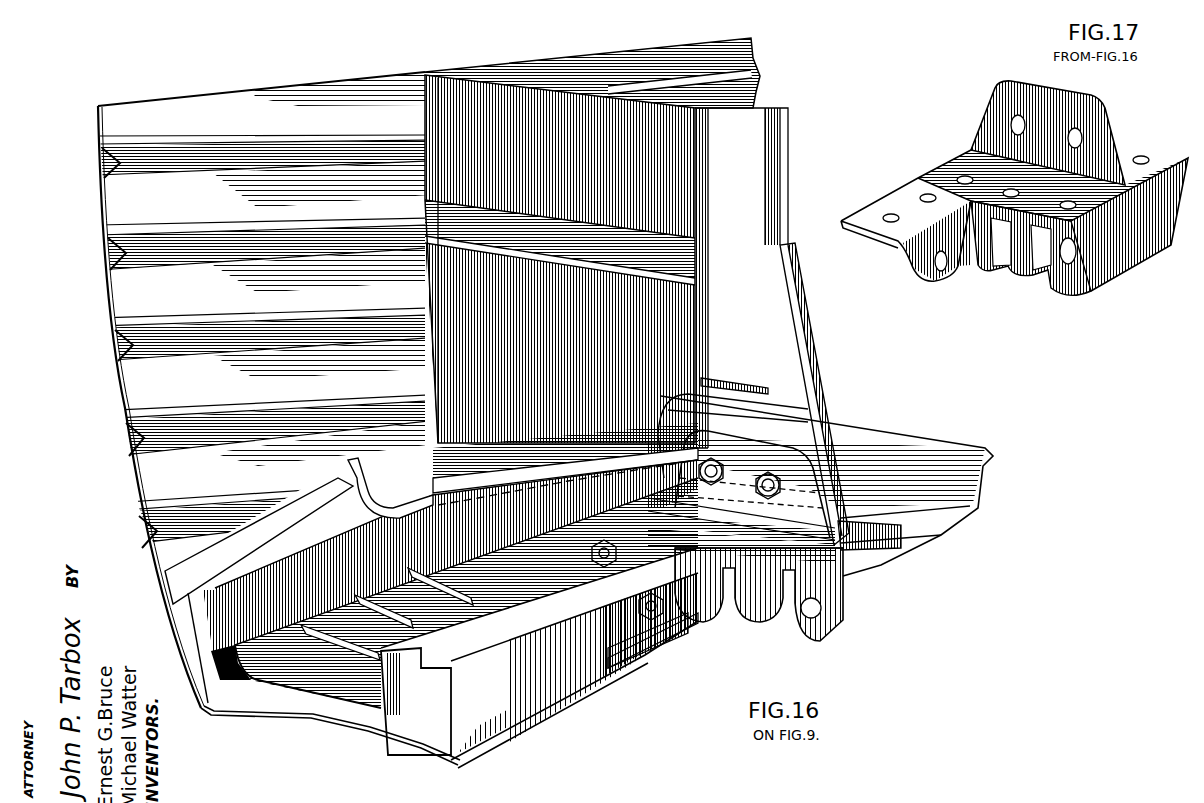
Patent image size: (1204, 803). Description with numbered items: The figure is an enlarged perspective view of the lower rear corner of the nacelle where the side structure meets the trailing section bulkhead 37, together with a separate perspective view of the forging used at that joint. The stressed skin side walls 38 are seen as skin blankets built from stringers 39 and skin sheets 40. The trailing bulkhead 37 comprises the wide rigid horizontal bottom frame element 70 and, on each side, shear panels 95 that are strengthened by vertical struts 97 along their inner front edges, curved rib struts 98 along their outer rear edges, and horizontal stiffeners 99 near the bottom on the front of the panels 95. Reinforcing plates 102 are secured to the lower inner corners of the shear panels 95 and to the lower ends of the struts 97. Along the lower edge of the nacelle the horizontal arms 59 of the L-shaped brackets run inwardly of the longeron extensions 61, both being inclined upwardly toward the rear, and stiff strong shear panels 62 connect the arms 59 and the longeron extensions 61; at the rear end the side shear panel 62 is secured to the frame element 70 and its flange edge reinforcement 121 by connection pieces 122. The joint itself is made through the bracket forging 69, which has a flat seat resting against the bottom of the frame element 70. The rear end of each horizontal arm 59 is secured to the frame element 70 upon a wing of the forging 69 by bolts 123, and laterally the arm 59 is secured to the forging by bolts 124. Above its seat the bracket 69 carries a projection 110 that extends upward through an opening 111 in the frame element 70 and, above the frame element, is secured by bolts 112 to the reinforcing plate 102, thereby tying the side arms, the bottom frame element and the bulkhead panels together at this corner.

In FIG. 16, the trailing section bulkhead 37 is at (786, 163).
In FIG. 16, the stressed skin side walls 38 is at (104, 310).
In FIG. 16, the stringers 39 is at (100, 247).
In FIG. 16, the skin sheets 40 is at (94, 212).
In FIG. 16, the horizontal arms 59 is at (453, 712).
In FIG. 16, the longeron extensions 61 is at (196, 652).
In FIG. 16, the shear panels 62 is at (302, 710).
In FIG. 16, the bracket forgings 69 is at (836, 600).
In FIG. 17, the bracket forgings 69 is at (1140, 255).
In FIG. 16, the bottom frame element 70 is at (935, 528).
In FIG. 16, the shear panels 95 is at (530, 86).
In FIG. 16, the vertical struts 97 is at (750, 140).
In FIG. 16, the curved rib struts 98 is at (452, 38).
In FIG. 16, the horizontal stiffeners 99 is at (655, 262).
In FIG. 16, the reinforcing plates 102 is at (806, 337).
In FIG. 16, the projection 110 is at (782, 447).
In FIG. 17, the projection 110 is at (1094, 100).
In FIG. 16, the opening 111 is at (880, 533).
In FIG. 16, the bolts 112 is at (722, 465).
In FIG. 16, the flange edge reinforcement 121 is at (967, 470).
In FIG. 16, the connection pieces 122 is at (520, 545).
In FIG. 16, the bolts 123 is at (872, 440).
In FIG. 16, the bolts 124 is at (674, 630).